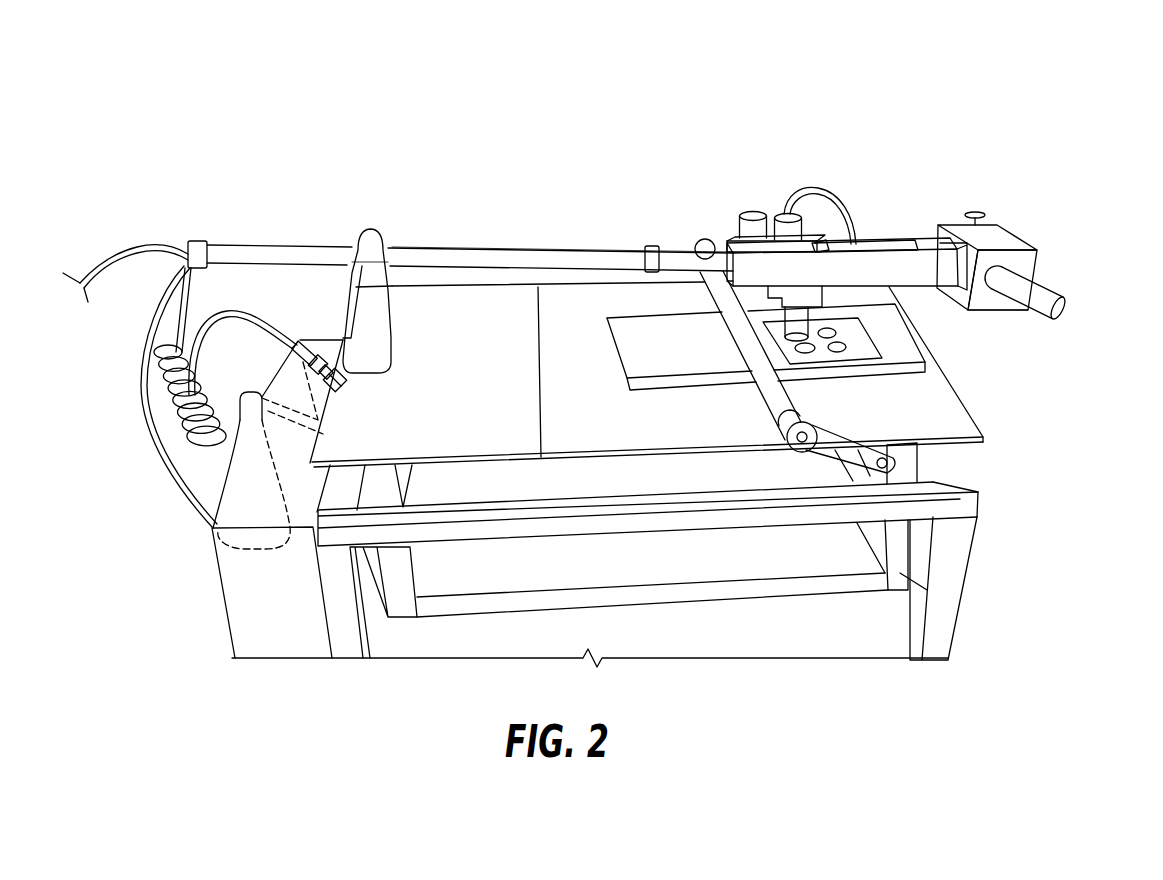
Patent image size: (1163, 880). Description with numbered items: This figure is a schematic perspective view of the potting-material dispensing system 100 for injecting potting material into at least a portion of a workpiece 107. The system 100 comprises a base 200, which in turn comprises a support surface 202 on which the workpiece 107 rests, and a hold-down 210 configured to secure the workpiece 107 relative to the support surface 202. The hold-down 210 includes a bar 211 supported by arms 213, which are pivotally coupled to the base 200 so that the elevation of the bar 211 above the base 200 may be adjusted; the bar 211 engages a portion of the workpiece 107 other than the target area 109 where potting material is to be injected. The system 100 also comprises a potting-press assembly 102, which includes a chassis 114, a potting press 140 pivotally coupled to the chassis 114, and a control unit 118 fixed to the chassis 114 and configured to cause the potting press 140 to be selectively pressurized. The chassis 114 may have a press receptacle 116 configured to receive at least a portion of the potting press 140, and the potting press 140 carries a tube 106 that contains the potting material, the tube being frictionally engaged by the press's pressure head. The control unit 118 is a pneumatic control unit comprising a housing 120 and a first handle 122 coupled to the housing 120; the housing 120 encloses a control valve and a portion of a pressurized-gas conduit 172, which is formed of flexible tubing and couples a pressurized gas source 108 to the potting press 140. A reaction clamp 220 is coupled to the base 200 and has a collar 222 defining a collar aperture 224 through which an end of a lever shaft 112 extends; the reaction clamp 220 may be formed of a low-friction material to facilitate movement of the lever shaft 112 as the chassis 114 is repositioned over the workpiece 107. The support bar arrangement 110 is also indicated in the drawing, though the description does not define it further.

The system 100 is at (421, 118).
The potting-press assembly 102 is at (518, 172).
The tube 106 is at (797, 315).
The workpiece 107 is at (627, 358).
The pressurized gas source 108 is at (230, 317).
The target area 109 is at (837, 333).
The support bar assembly 110 is at (583, 240).
The lever shaft 112 is at (443, 258).
The chassis 114 is at (892, 252).
The press receptacle 116 is at (825, 232).
The control unit 118 is at (1003, 312).
The housing 120 is at (995, 265).
The first handle 122 is at (1065, 308).
The potting press 140 is at (810, 219).
The pressurized-gas conduit 172 is at (177, 477).
The base 200 is at (302, 468).
The support surface 202 is at (455, 421).
The hold-down 210 is at (832, 413).
The bar 211 is at (777, 396).
The arms 213 is at (863, 455).
The reaction clamp 220 is at (397, 347).
The collar 222 is at (373, 230).
The collar aperture 224 is at (346, 268).